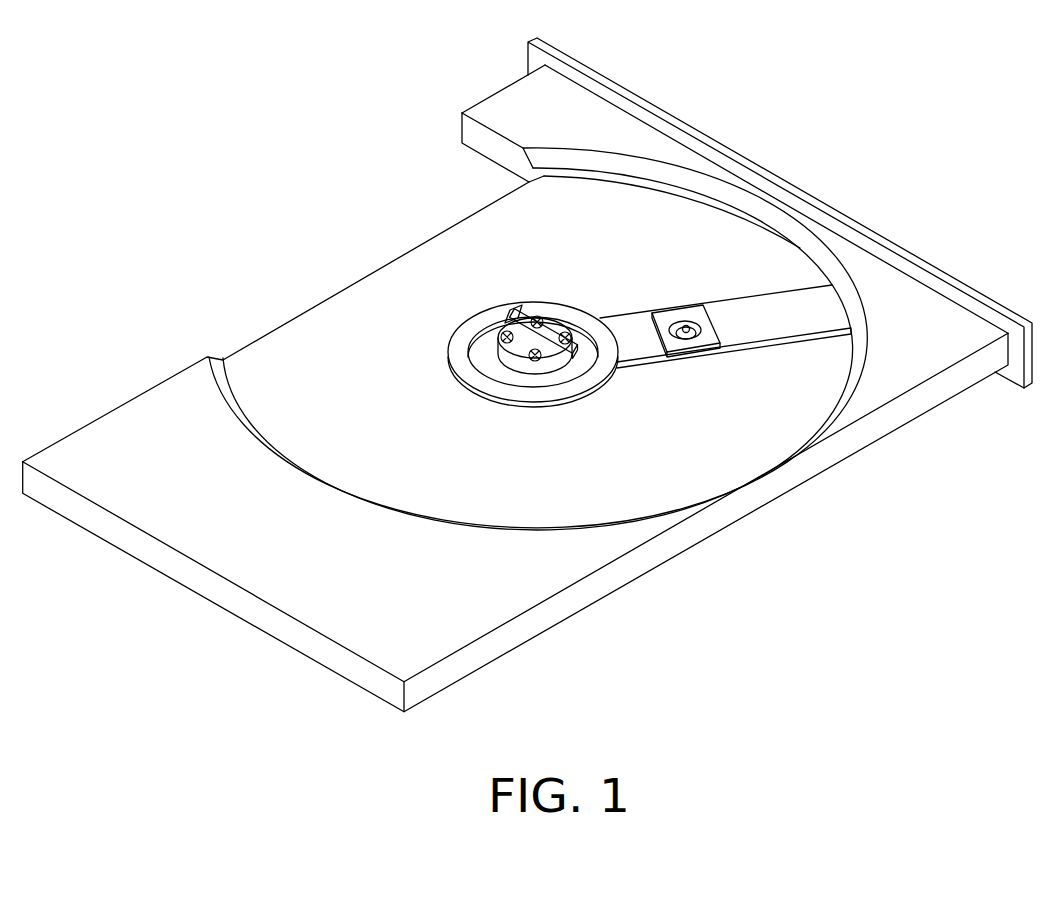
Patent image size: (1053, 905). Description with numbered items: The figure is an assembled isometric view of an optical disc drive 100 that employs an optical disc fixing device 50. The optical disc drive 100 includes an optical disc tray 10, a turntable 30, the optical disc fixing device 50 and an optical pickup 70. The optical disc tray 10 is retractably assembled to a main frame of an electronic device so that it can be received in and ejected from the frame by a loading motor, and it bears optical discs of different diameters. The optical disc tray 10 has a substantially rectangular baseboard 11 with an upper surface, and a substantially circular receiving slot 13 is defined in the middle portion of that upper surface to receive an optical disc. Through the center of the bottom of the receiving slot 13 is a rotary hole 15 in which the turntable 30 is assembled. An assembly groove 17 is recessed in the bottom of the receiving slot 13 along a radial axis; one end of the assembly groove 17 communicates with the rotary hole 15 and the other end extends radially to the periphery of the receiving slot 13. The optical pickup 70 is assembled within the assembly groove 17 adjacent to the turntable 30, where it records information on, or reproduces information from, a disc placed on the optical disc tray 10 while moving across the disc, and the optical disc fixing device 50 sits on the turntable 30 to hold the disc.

The optical disc drive 100 is at (527, 362).
The optical disc tray 10 is at (527, 375).
The baseboard 11 is at (553, 562).
The circular receiving slot 13 is at (618, 483).
The rotary hole 15 is at (622, 368).
The assembly groove 17 is at (748, 409).
The turntable 30 is at (460, 357).
The optical disc fixing device 50 is at (550, 325).
The optical pickup 70 is at (712, 333).